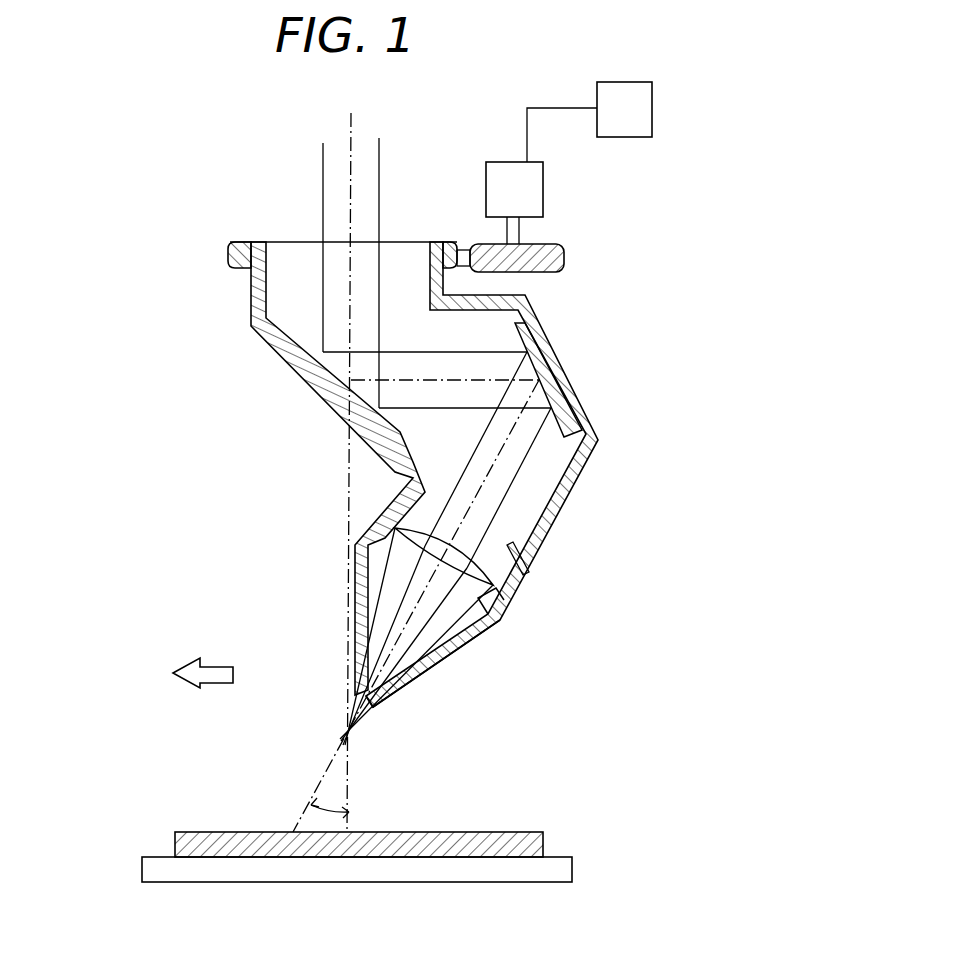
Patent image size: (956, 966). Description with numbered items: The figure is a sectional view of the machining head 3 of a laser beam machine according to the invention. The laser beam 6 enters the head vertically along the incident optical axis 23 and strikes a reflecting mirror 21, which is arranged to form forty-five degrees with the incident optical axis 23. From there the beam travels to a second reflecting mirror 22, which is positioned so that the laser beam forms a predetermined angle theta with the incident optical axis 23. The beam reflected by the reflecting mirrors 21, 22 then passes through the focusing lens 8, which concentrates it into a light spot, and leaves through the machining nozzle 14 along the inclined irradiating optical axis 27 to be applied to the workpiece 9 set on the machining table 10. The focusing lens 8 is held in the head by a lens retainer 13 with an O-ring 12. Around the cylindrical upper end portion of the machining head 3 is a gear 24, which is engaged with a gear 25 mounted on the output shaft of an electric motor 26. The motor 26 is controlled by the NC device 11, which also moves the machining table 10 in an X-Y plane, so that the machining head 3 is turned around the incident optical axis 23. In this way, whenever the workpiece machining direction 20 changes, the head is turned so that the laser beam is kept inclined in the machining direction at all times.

The machining head 3 is at (583, 467).
The laser beam 6 is at (323, 170).
The focusing lens 8 is at (418, 522).
The workpiece 9 is at (500, 830).
The machining table 10 is at (572, 870).
The NC device 11 is at (652, 108).
The O-ring 12 is at (500, 588).
The lens retainer 13 is at (513, 548).
The machining nozzle 14 is at (387, 700).
The workpiece machining direction 20 is at (222, 660).
The reflecting mirror 21 is at (293, 327).
The reflecting mirror 22 is at (515, 325).
The incident optical axis 23 is at (350, 137).
The gear 24 is at (243, 268).
The gear 25 is at (566, 258).
The electric motor 26 is at (486, 190).
The irradiating optical axis 27 is at (322, 773).